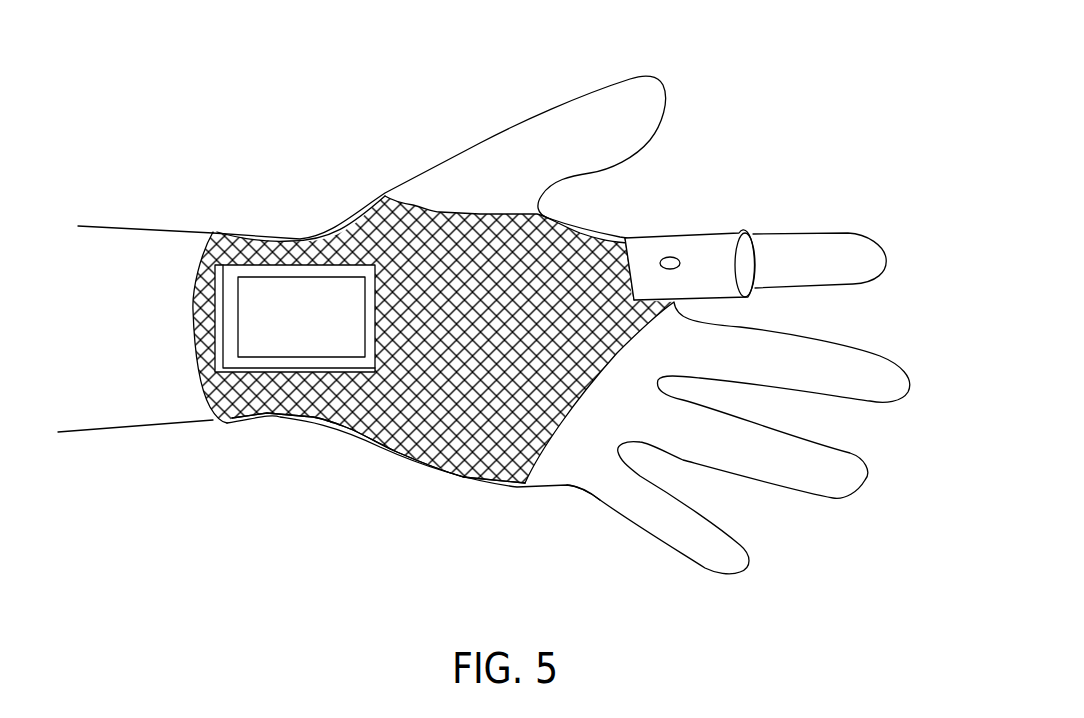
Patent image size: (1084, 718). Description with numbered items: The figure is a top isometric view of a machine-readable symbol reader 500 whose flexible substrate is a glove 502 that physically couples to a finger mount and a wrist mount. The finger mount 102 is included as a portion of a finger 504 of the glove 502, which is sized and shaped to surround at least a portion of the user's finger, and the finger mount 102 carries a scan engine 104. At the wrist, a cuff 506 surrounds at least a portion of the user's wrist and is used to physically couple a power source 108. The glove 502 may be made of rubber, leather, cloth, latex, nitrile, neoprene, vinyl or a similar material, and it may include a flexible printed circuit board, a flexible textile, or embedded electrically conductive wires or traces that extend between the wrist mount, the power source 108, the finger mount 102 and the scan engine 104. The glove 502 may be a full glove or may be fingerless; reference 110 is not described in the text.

The machine-readable symbol reader 500 is at (847, 65).
The finger mount 102 is at (723, 232).
The scan engine 104 is at (290, 237).
The power source 108 is at (280, 363).
The mesh material portion 110 is at (415, 272).
The glove 502 is at (417, 445).
The finger 504 is at (622, 236).
The cuff 506 is at (242, 234).